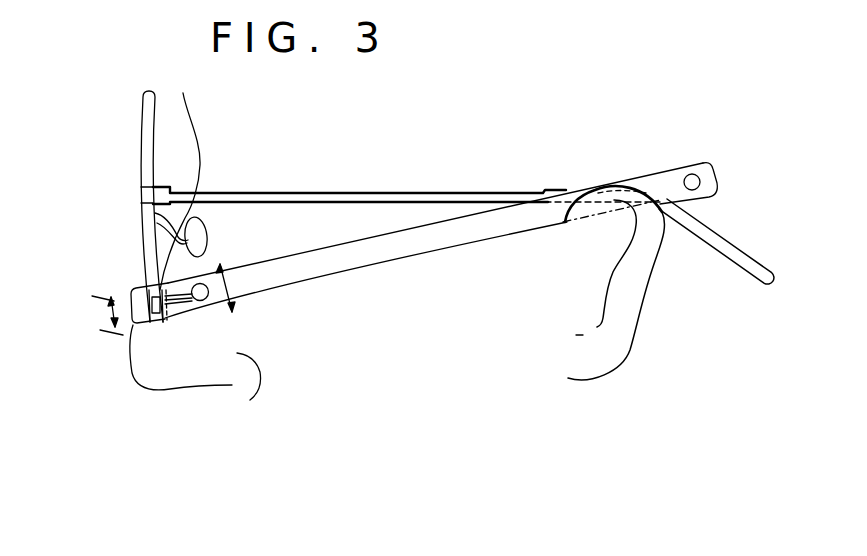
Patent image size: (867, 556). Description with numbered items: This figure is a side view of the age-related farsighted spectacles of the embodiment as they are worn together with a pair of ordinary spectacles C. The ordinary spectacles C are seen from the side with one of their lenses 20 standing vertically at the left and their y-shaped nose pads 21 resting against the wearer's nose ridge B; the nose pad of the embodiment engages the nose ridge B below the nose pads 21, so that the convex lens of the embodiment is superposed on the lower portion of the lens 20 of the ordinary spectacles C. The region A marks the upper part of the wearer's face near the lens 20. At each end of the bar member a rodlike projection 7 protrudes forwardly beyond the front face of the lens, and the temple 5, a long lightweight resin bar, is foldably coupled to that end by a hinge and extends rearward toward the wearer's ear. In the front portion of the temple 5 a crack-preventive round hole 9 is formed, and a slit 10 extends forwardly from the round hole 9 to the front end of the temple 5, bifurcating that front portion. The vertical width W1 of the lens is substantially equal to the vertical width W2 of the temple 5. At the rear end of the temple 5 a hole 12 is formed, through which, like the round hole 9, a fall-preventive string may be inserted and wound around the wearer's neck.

The temple 5 is at (398, 252).
The rodlike projection 7 is at (140, 325).
The crack-preventive round hole 9 is at (200, 308).
The slit 10 is at (187, 320).
The hole 12 is at (691, 174).
The lens 20 is at (140, 150).
The y-shaped nose pad 21 is at (200, 231).
The point A is at (200, 160).
The nose ridge B is at (153, 245).
The ordinary spectacles C is at (383, 195).
The vertical width of the lenses W1 is at (107, 313).
The vertical width of the temples W2 is at (227, 288).